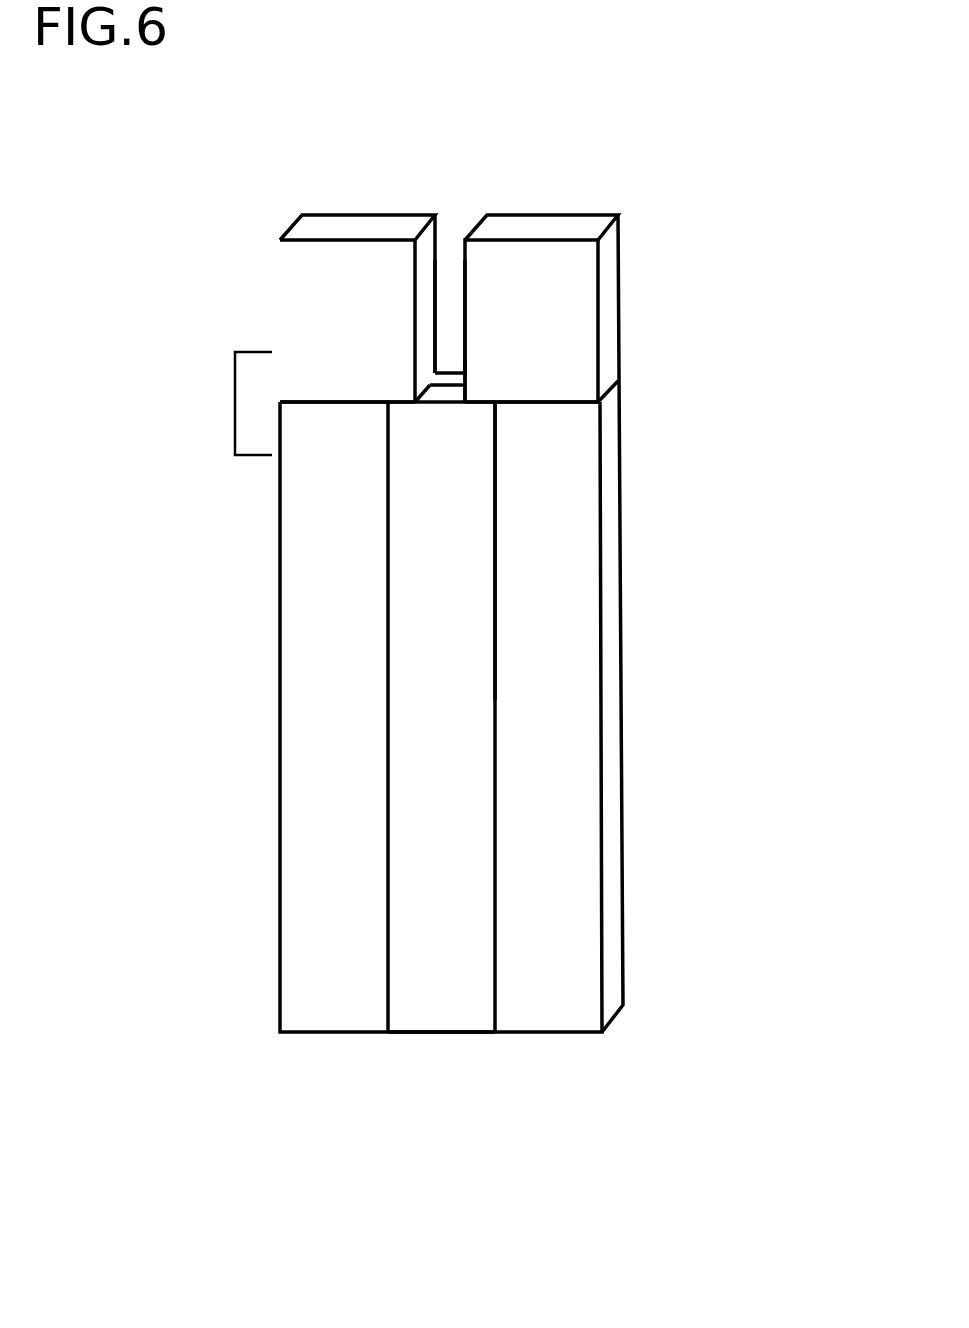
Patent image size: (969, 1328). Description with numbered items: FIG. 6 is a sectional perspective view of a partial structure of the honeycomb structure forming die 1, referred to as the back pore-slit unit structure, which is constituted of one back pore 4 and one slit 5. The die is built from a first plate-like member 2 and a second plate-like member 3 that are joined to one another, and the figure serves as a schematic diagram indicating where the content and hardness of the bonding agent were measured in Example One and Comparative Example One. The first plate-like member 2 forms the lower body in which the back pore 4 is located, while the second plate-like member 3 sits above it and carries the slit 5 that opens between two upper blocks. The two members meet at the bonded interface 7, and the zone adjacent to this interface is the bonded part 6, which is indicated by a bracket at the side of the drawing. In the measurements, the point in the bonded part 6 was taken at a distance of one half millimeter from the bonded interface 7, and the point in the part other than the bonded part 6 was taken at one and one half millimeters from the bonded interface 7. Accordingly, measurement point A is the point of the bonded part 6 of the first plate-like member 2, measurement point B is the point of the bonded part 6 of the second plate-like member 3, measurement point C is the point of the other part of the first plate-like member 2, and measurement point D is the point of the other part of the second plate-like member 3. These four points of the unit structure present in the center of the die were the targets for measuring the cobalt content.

The honeycomb structure forming die 1 is at (673, 131).
The first plate-like member 2 is at (244, 768).
The second plate-like member 3 is at (244, 314).
The back pore 4 is at (448, 875).
The slit 5 is at (452, 250).
The bonded part 6 is at (235, 403).
The bonded interface 7 is at (360, 403).
The measurement point A is at (577, 431).
The measurement point B is at (578, 377).
The measurement point C is at (576, 539).
The measurement point D is at (578, 292).